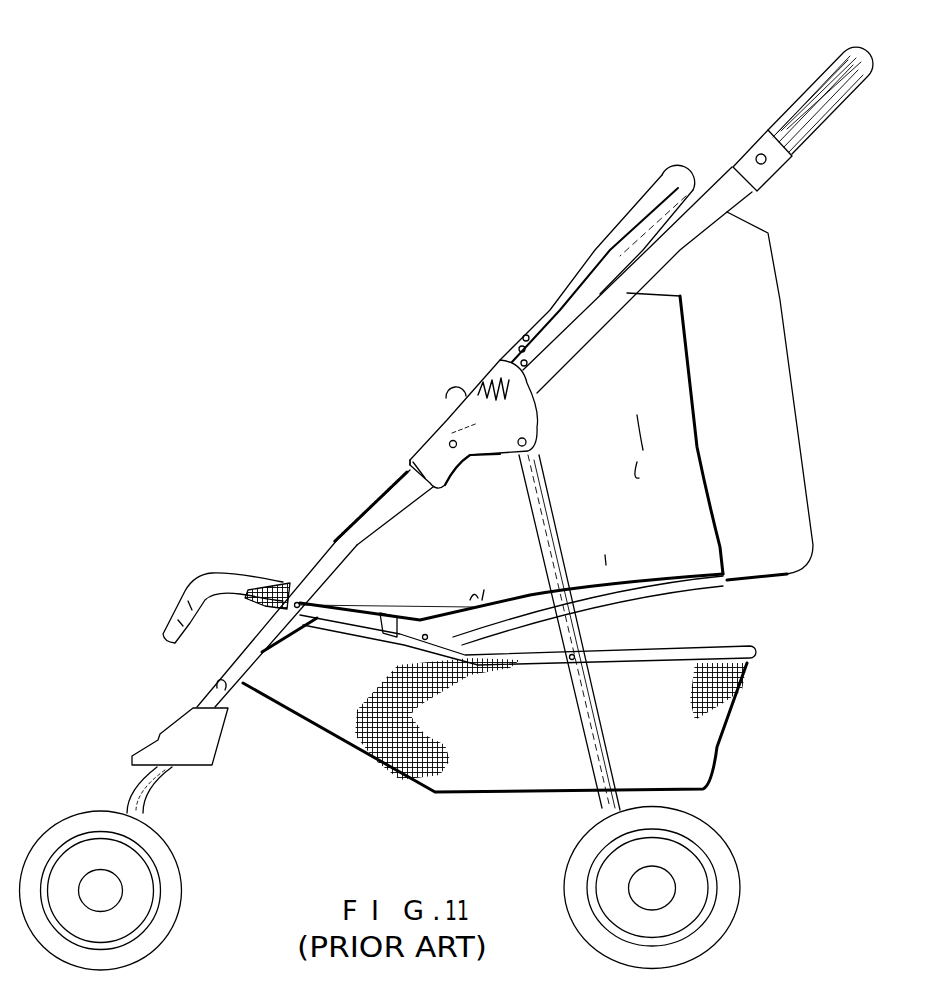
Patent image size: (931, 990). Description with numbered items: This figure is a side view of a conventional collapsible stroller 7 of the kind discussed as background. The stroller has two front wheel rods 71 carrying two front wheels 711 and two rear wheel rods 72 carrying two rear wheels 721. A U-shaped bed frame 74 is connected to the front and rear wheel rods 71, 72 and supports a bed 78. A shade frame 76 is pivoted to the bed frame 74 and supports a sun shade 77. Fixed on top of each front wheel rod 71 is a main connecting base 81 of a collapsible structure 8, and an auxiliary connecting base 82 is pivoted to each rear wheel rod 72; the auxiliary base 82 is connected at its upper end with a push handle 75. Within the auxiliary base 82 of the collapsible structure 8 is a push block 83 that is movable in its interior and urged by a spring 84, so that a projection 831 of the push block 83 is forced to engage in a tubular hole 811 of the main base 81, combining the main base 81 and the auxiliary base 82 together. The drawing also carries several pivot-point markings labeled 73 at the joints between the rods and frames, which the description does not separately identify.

The stroller frame 7 is at (795, 229).
The front wheel rods 71 is at (323, 565).
The front wheels 711 is at (182, 905).
The rear wheel rods 72 is at (595, 753).
The rear wheels 721 is at (745, 887).
The pivot 73 is at (537, 437).
The U-shaped bed frame 74 is at (720, 655).
The push handle 75 is at (800, 97).
The shade frame 76 is at (697, 570).
The sun shade 77 is at (797, 423).
The bed 78 is at (720, 750).
The collapsible structure 8 is at (480, 233).
The main connecting base 81 is at (412, 460).
The tubular hole 811 is at (452, 460).
The auxiliary connecting base 82 is at (503, 357).
The push block 83 is at (450, 407).
The projection 831 is at (470, 460).
The spring 84 is at (493, 393).